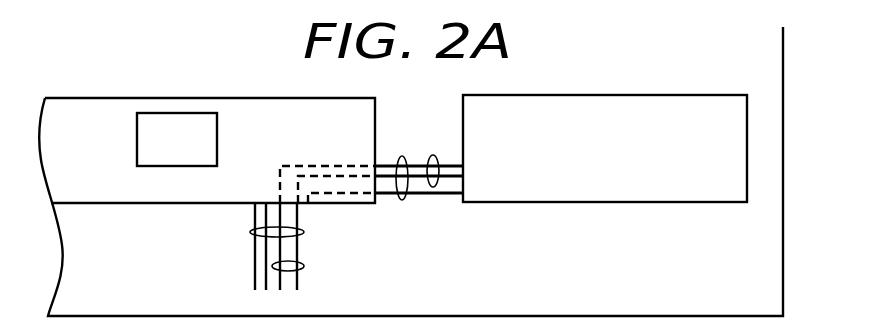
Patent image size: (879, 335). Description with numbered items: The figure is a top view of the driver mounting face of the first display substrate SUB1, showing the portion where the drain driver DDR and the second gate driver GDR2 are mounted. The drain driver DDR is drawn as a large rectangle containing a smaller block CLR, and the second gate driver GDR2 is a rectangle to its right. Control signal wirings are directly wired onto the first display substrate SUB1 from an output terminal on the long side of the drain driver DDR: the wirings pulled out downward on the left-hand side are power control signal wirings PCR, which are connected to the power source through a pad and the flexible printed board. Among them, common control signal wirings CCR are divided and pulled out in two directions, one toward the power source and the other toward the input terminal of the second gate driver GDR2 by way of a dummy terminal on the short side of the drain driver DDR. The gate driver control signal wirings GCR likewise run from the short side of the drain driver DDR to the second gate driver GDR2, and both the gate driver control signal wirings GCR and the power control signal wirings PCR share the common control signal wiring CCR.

The first display substrate SUB1 is at (411, 171).
The drain driver DDR is at (210, 150).
The clock region CLR is at (177, 139).
The second gate driver GDR2 is at (605, 148).
The common control signal wiring CCR is at (433, 155).
The gate driver control signal wiring GCR is at (402, 200).
The power control signal wiring PCR is at (253, 232).